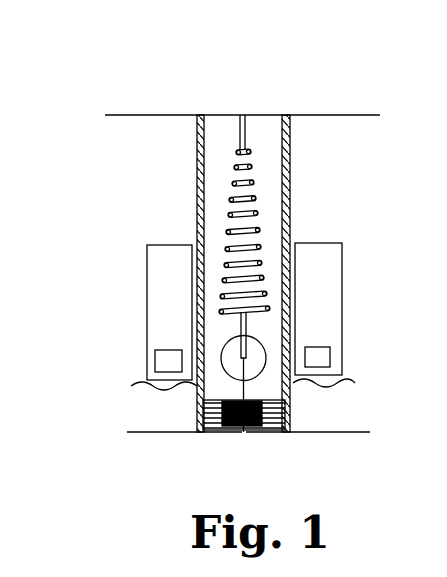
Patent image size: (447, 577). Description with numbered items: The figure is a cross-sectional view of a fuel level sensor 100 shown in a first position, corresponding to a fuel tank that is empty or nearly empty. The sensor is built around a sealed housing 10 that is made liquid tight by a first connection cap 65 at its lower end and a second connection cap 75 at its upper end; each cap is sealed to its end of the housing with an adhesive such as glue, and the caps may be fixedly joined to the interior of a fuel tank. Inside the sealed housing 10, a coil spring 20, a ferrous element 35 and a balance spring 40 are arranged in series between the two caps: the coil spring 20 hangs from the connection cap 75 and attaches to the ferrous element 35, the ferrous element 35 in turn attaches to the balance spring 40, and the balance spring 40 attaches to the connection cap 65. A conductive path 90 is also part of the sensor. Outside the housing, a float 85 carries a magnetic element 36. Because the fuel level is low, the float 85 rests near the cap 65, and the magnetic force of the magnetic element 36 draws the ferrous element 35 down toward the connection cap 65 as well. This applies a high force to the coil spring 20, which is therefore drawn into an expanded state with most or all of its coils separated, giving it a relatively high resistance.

The fuel level sensor 100 is at (44, 47).
The second connection cap 75 is at (150, 115).
The conductive path 90 is at (248, 108).
The coil spring 20 is at (252, 183).
The sealed housing 10 is at (197, 200).
The float 85 is at (342, 297).
The magnetic element 36 is at (330, 355).
The ferrous element 35 is at (262, 370).
The first connection cap 65 is at (170, 432).
The balance spring 40 is at (282, 432).